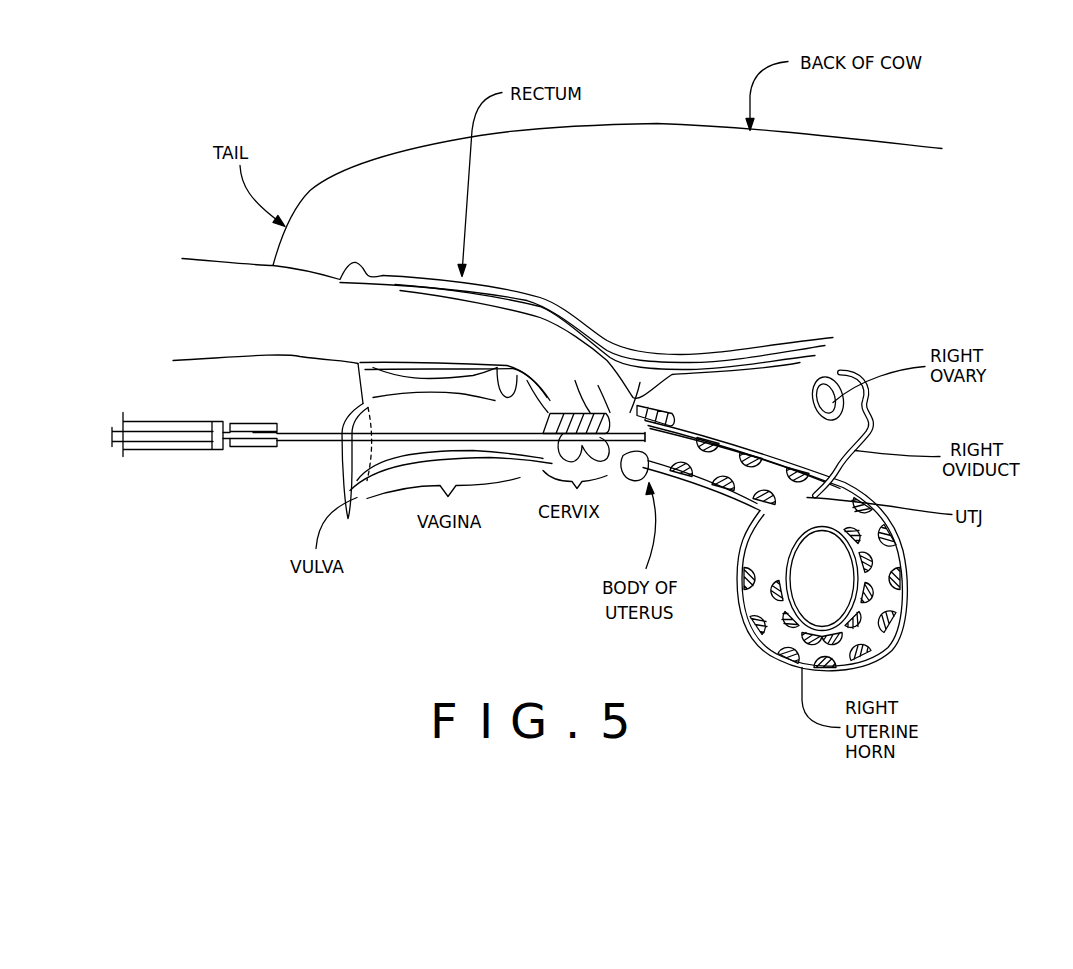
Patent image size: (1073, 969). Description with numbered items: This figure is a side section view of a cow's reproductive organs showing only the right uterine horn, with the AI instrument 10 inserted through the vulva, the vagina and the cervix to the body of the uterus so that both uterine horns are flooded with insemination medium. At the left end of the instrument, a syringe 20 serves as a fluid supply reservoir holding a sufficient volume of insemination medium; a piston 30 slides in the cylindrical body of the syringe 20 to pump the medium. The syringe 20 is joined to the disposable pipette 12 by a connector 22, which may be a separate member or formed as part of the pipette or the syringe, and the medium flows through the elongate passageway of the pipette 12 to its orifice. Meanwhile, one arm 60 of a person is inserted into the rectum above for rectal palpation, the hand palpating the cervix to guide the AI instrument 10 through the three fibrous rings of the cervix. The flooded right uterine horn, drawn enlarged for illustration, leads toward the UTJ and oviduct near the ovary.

The AI instrument 10 is at (248, 526).
The pipette 12 is at (313, 440).
The syringe 20 is at (142, 487).
The connector 22 is at (262, 450).
The piston 30 is at (158, 430).
The arm 60 is at (210, 258).